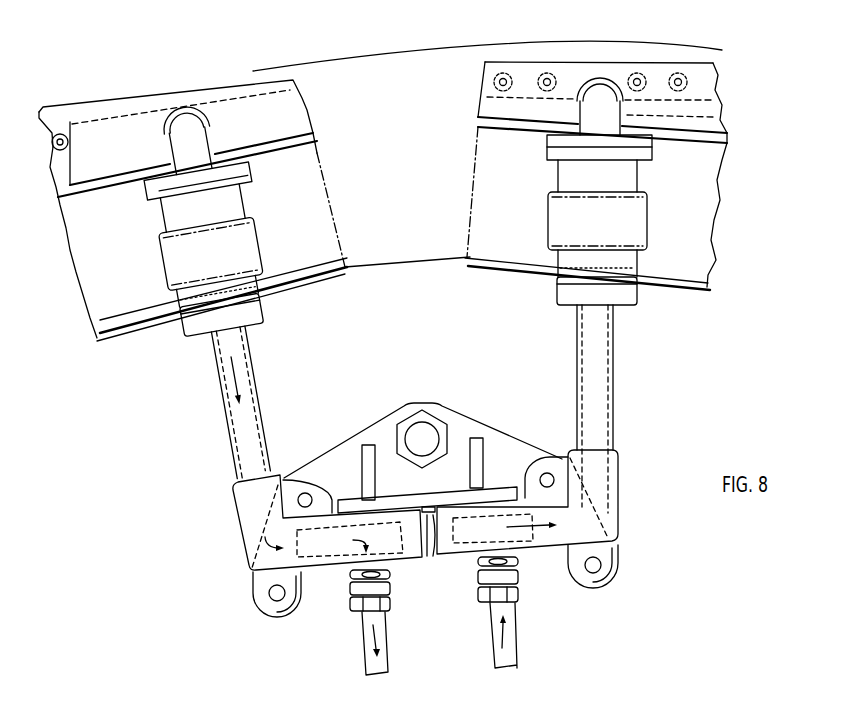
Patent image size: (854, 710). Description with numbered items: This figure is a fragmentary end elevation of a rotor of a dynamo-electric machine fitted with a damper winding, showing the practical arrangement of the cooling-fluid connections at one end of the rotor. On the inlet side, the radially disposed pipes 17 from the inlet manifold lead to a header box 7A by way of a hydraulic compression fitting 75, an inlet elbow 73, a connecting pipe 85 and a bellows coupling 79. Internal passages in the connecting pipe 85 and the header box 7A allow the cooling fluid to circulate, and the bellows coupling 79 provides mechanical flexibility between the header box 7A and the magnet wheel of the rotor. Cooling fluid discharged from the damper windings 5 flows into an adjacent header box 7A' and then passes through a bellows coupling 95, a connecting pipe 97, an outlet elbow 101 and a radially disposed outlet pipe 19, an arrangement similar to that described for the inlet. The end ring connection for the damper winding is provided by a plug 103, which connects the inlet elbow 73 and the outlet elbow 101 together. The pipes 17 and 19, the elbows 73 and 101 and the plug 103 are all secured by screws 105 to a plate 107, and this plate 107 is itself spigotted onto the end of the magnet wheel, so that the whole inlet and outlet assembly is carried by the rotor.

The damper windings 5 is at (546, 76).
The header box 7A is at (490, 156).
The adjacent header box 7A' is at (193, 178).
The radially disposed pipes 17 is at (517, 636).
The radially disposed outlet pipe 19 is at (367, 657).
The inlet elbow 73 is at (610, 524).
The hydraulic compression fitting 75 is at (521, 575).
The bellows coupling 79 is at (567, 220).
The connecting pipe 85 is at (607, 408).
The bellows coupling 95 is at (258, 227).
The connecting pipe 97 is at (225, 352).
The outlet elbow 101 is at (280, 558).
The plug 103 is at (430, 553).
The screws 105 is at (305, 493).
The plate 107 is at (366, 428).